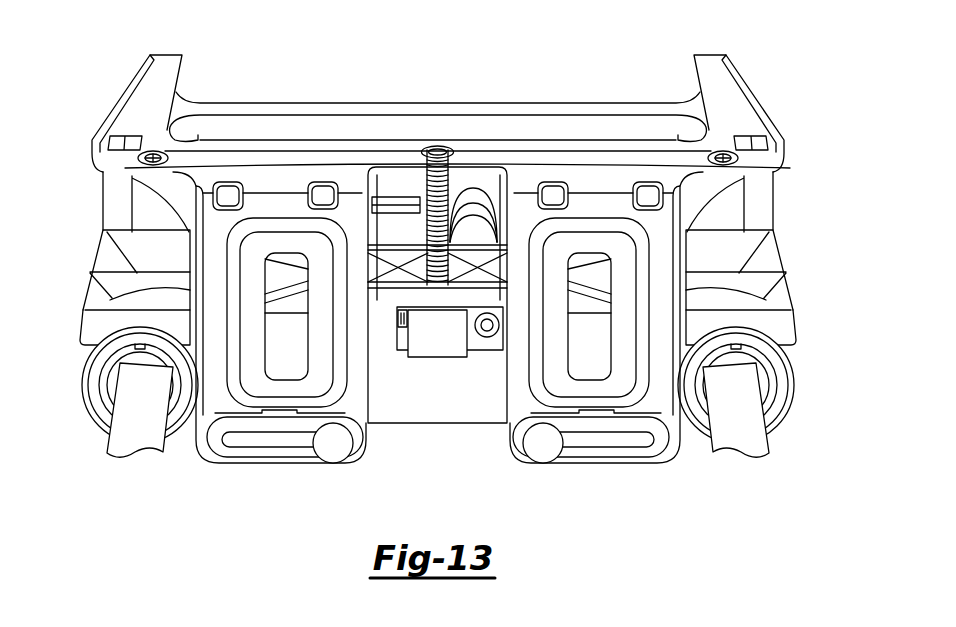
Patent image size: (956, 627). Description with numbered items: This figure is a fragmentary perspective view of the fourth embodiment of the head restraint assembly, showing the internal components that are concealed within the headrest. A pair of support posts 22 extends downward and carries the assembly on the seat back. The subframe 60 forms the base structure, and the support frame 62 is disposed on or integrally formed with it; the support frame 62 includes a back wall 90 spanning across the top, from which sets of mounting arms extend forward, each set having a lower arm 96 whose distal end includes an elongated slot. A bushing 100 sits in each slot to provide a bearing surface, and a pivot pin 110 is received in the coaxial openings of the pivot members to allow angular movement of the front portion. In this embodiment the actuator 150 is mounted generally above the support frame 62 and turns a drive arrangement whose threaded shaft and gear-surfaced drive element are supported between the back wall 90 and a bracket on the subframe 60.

The support post 22 is at (112, 434).
The subframe 60 is at (92, 276).
The support frame 62 is at (102, 112).
The back wall 90 is at (763, 120).
The lower arm 96 is at (363, 416).
The bushing 100 is at (225, 458).
The pivot pin 110 is at (337, 450).
The actuator 150 is at (478, 200).